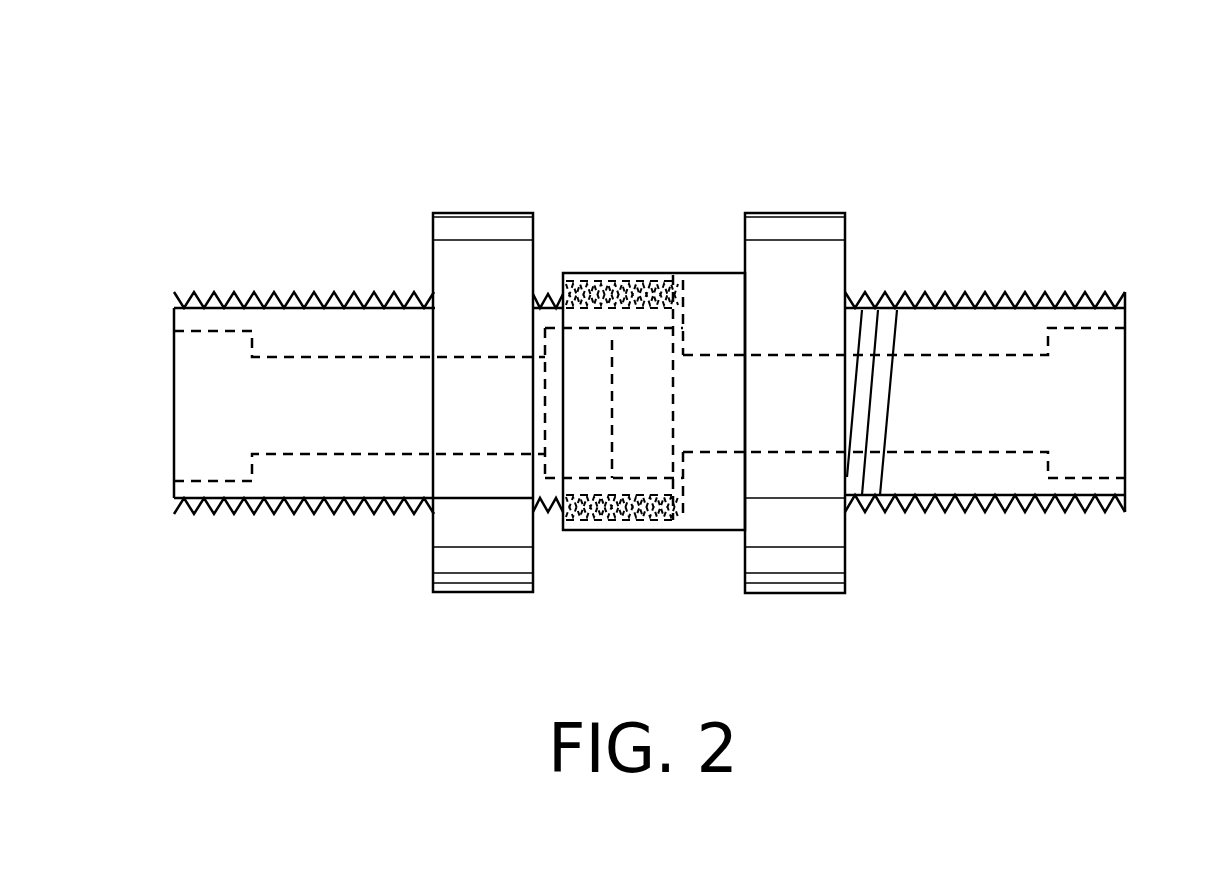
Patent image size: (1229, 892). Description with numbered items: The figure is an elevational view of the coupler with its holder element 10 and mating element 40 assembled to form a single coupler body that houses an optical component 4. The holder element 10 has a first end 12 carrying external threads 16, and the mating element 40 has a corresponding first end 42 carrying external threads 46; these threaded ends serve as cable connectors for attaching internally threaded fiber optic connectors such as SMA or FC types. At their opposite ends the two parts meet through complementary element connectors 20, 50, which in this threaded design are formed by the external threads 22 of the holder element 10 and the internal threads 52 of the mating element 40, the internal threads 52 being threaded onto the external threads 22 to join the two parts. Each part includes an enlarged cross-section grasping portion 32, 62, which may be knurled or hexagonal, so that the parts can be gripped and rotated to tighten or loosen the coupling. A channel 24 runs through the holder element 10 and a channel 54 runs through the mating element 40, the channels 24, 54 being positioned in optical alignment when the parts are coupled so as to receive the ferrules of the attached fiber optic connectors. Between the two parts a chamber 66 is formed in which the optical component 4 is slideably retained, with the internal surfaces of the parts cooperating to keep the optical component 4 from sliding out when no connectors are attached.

The holder element 10 is at (218, 246).
The first end 12 is at (180, 560).
The external threads 16 is at (210, 514).
The channel 24 is at (312, 355).
The external threads 22 is at (546, 298).
The grasping portion 32 is at (487, 213).
The element connector 20 is at (626, 505).
The element connector 50 is at (600, 273).
The internal threads 52 is at (670, 275).
The optical component 4 is at (553, 470).
The chamber 66 is at (652, 455).
The grasping portion 62 is at (797, 213).
The first end 42 is at (1160, 532).
The mating element 40 is at (1115, 185).
The channel 54 is at (972, 355).
The external threads 46 is at (1078, 502).